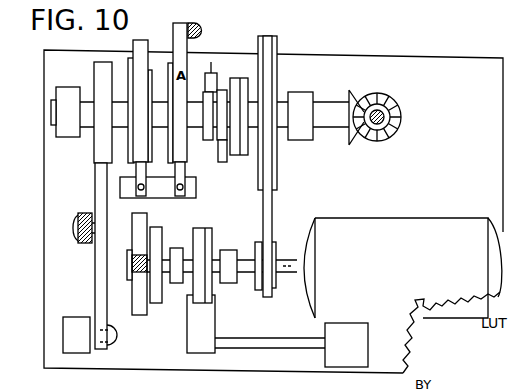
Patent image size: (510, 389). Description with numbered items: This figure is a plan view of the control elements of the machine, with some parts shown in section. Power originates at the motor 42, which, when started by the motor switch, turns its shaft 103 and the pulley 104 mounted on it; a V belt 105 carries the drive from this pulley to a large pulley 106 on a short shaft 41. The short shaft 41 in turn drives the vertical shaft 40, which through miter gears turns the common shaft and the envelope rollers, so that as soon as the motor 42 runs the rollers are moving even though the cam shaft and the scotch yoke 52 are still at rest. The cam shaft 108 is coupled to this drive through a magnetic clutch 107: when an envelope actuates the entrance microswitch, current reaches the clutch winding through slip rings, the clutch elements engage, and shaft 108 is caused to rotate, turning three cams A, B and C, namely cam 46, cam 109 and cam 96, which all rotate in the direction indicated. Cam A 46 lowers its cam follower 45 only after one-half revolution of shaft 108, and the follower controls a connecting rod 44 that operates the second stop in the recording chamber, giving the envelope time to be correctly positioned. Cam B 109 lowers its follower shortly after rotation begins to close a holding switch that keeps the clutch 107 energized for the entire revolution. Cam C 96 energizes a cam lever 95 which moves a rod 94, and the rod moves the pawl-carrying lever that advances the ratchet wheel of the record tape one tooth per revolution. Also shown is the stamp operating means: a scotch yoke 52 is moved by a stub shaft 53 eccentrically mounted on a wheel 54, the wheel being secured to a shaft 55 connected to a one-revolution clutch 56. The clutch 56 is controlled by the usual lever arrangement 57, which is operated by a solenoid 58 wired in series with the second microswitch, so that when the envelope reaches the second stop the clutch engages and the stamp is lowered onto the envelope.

The vertical shaft 40 is at (382, 117).
The short shaft 41 is at (326, 125).
The motor 42 is at (410, 222).
The connecting rod 44 is at (201, 28).
The cam follower 45 is at (180, 168).
The cam 46 is at (189, 70).
The scotch yoke 52 is at (133, 278).
The stub shaft 53 is at (131, 258).
The wheel 54 is at (157, 243).
The shaft 55 is at (168, 272).
The one-revolution clutch 56 is at (204, 228).
The lever arrangement 57 is at (187, 341).
The solenoid 58 is at (368, 348).
The rod 94 is at (84, 245).
The cam lever 95 is at (97, 189).
The rotating cam 96 is at (97, 148).
The shaft 103 is at (287, 272).
The pulley 104 is at (258, 252).
The V belt 105 is at (273, 208).
The large pulley 106 is at (280, 76).
The magnetic clutch 107 is at (230, 88).
The shaft 108 is at (87, 100).
The cam 109 is at (150, 70).